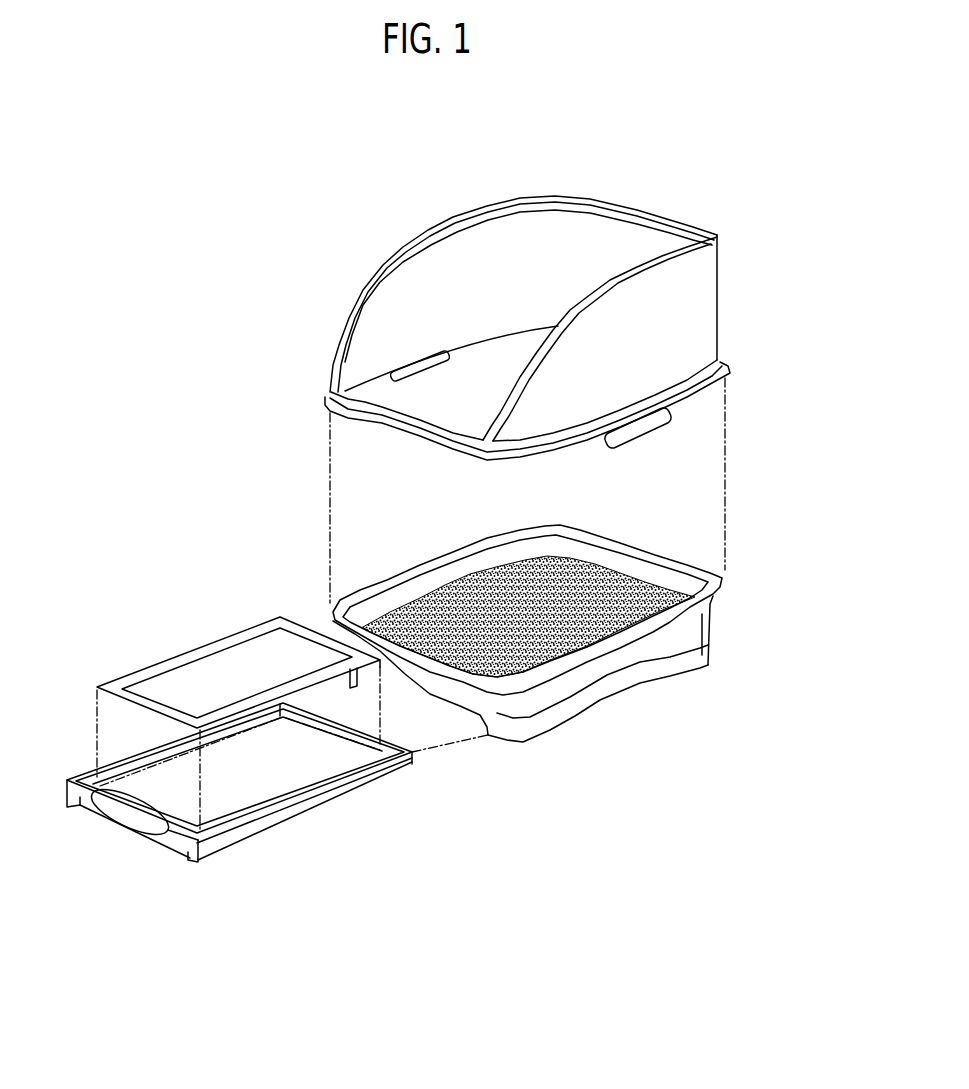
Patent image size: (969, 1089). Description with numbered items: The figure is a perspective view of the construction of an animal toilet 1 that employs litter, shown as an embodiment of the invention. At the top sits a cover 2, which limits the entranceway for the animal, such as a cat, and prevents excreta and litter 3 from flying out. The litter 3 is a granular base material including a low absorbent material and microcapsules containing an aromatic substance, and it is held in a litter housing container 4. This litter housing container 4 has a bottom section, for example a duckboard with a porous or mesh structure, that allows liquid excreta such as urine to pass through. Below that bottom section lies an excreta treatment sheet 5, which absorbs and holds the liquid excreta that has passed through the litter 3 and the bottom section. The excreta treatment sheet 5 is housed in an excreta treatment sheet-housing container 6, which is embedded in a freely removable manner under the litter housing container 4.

The animal toilet 1 is at (762, 235).
The cover 2 is at (335, 312).
The litter 3 is at (493, 577).
The litter housing container 4 is at (607, 675).
The excreta treatment sheet 5 is at (175, 648).
The excreta treatment sheet-housing container 6 is at (315, 820).